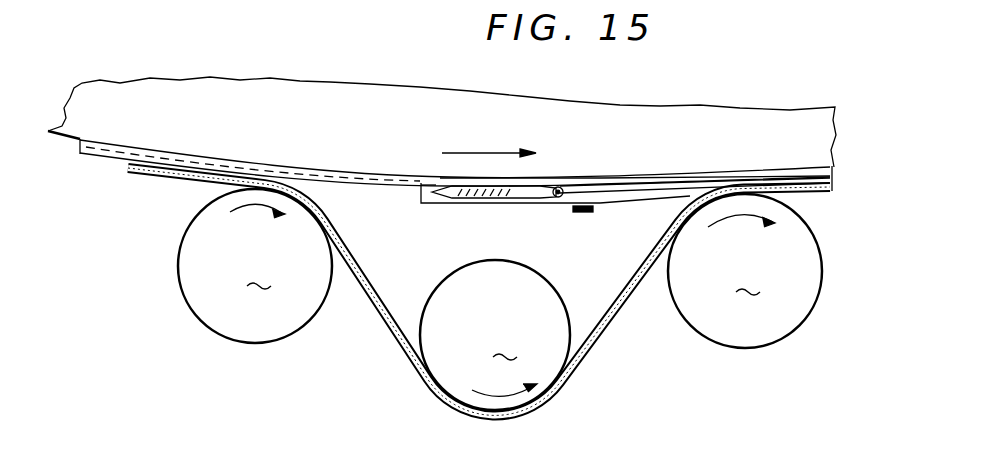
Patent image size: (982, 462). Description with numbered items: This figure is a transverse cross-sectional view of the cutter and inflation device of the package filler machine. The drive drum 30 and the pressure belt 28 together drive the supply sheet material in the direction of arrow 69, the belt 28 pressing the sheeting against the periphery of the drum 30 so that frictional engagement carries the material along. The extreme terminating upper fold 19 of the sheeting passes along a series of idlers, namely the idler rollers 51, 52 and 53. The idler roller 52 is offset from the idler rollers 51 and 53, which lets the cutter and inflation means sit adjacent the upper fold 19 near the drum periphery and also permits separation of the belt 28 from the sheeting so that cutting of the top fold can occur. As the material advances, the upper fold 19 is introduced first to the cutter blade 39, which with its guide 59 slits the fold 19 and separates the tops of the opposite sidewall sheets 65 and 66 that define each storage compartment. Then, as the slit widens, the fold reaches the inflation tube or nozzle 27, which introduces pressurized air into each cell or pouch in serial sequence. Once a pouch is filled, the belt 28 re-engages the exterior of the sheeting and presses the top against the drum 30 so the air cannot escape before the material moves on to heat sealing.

The drive drum 30 is at (310, 97).
The upper fold edge 19 is at (120, 153).
The arrow 69 is at (473, 153).
The sheet 66 is at (660, 153).
The sheet 65 is at (706, 176).
The guide 59 is at (452, 194).
The cutter blade 39 is at (500, 190).
The inflation tube or nozzle 27 is at (562, 198).
The idler roller 51 is at (255, 266).
The idler roller 52 is at (495, 335).
The idler roller 53 is at (745, 271).
The pressure belt 28 is at (403, 349).